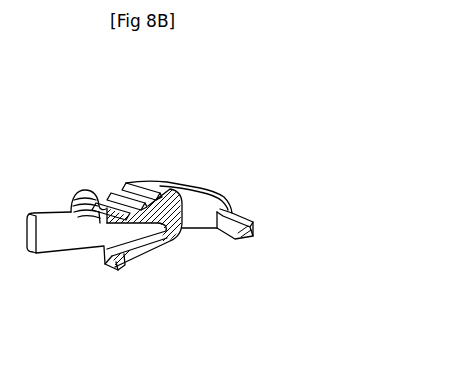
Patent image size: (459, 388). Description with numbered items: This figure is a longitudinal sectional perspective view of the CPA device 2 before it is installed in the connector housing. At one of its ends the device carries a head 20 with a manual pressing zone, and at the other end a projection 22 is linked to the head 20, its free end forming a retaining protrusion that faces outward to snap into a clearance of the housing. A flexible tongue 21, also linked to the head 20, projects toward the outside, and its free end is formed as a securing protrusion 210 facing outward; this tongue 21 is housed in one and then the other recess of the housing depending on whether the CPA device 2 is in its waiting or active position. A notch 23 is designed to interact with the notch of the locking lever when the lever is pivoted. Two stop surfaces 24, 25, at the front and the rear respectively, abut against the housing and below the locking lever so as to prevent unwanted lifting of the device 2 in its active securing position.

The CPA device 2 is at (207, 159).
The head 20 is at (122, 186).
The flexible tongue 21 is at (174, 244).
The projections 22 is at (52, 236).
The notch 23 is at (99, 229).
The stop surface 24 is at (79, 211).
The stop surface 25 is at (244, 214).
The securing protrusion 210 is at (121, 270).